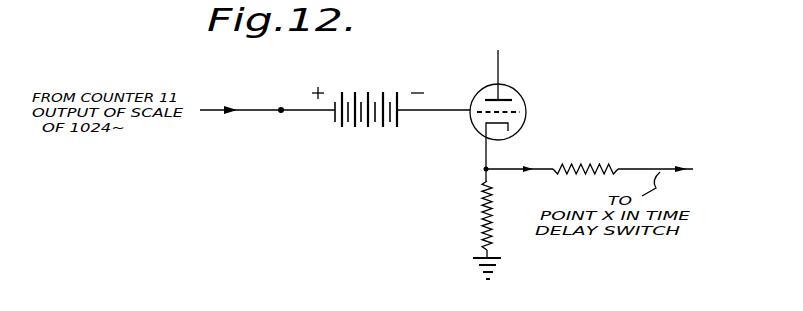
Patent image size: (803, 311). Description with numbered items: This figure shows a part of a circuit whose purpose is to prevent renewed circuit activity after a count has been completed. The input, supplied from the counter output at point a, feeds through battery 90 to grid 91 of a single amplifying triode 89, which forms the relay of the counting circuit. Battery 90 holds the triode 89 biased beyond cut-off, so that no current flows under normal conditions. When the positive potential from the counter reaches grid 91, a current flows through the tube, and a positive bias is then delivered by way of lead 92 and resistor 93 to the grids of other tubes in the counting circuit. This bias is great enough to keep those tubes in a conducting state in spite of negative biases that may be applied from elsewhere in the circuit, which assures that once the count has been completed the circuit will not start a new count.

The point a (input node) a is at (281, 113).
The amplifying triode 89 is at (523, 93).
The battery 90 is at (384, 130).
The grid 91 is at (512, 117).
The lead 92 is at (508, 167).
The resistor 93 is at (590, 163).